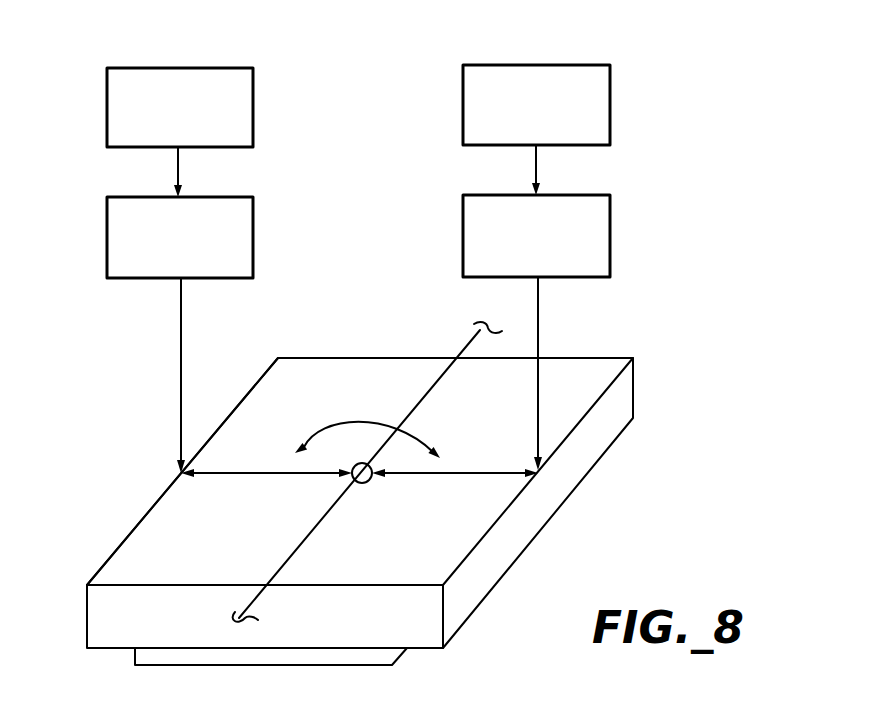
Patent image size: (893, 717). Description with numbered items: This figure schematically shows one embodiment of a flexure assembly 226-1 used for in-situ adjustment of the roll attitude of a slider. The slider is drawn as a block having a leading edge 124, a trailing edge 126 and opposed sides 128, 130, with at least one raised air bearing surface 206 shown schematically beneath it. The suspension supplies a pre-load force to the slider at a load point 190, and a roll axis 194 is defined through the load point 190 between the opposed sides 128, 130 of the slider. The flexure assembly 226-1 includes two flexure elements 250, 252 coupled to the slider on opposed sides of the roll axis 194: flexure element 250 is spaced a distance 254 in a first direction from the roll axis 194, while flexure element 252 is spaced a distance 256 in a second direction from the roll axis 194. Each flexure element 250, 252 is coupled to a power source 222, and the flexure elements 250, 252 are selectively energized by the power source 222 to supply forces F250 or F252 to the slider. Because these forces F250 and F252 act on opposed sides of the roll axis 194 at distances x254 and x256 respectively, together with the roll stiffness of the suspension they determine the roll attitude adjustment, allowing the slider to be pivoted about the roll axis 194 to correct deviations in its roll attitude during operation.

The flexure assembly 226-1 is at (674, 58).
The power source 222 is at (253, 100).
The flexure element 250 is at (253, 218).
The flexure element 252 is at (610, 218).
The force F250 is at (178, 370).
The force F252 is at (538, 295).
The leading edge 124 is at (357, 360).
The side 128 is at (585, 449).
The trailing edge 126 is at (110, 625).
The side 130 is at (102, 568).
The raised air bearing surface 206 is at (287, 665).
The roll axis 194 is at (462, 352).
The load point 190 is at (350, 480).
The distance x254 is at (266, 461).
The distance x256 is at (455, 460).
The distance 254 is at (230, 482).
The distance 256 is at (465, 488).